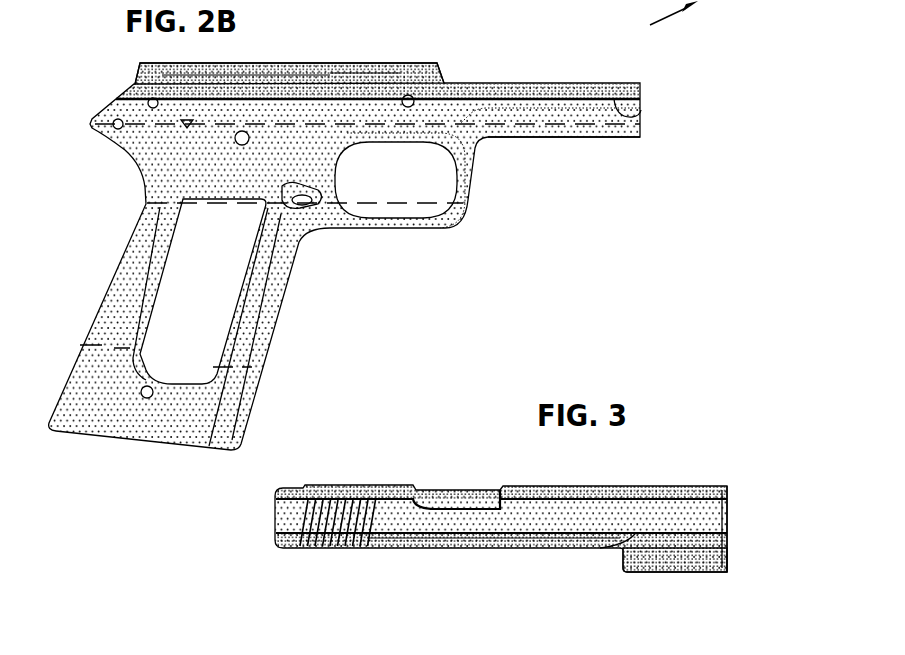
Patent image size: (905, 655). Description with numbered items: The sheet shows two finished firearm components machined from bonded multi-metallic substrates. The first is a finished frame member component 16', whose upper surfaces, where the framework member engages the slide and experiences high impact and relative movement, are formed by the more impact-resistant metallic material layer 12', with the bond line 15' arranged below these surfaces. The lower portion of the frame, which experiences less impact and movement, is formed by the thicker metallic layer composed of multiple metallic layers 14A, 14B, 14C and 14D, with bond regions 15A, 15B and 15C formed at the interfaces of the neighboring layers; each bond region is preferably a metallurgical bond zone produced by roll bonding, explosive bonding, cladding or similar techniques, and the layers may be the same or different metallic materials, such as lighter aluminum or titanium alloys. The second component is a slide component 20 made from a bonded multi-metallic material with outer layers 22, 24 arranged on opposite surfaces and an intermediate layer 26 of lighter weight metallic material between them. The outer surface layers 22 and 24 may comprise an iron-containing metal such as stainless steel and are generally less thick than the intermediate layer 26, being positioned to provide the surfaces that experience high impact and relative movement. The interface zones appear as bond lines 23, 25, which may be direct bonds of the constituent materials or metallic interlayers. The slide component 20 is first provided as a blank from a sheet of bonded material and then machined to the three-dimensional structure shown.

In FIG. 2B, the impact-resistant metallic material layer 12' is at (378, 68).
In FIG. 2B, the metallic layer 14A is at (136, 110).
In FIG. 2B, the metallic layer 14B is at (560, 133).
In FIG. 2B, the metallic layer 14C is at (283, 306).
In FIG. 2B, the metallic layer 14D is at (245, 401).
In FIG. 2B, the bond line 15' is at (662, 105).
In FIG. 2B, the bond region 15A is at (618, 125).
In FIG. 2B, the bond region 15B is at (160, 206).
In FIG. 2B, the bond region 15C is at (103, 345).
In FIG. 2B, the frame member component 16' is at (344, 256).
In FIG. 3, the slide component 20 is at (643, 467).
In FIG. 3, the outer layer 22 is at (542, 492).
In FIG. 3, the bond line 23 is at (733, 508).
In FIG. 3, the outer layer 24 is at (515, 548).
In FIG. 3, the bond line 25 is at (625, 522).
In FIG. 3, the intermediate layer 26 is at (568, 525).